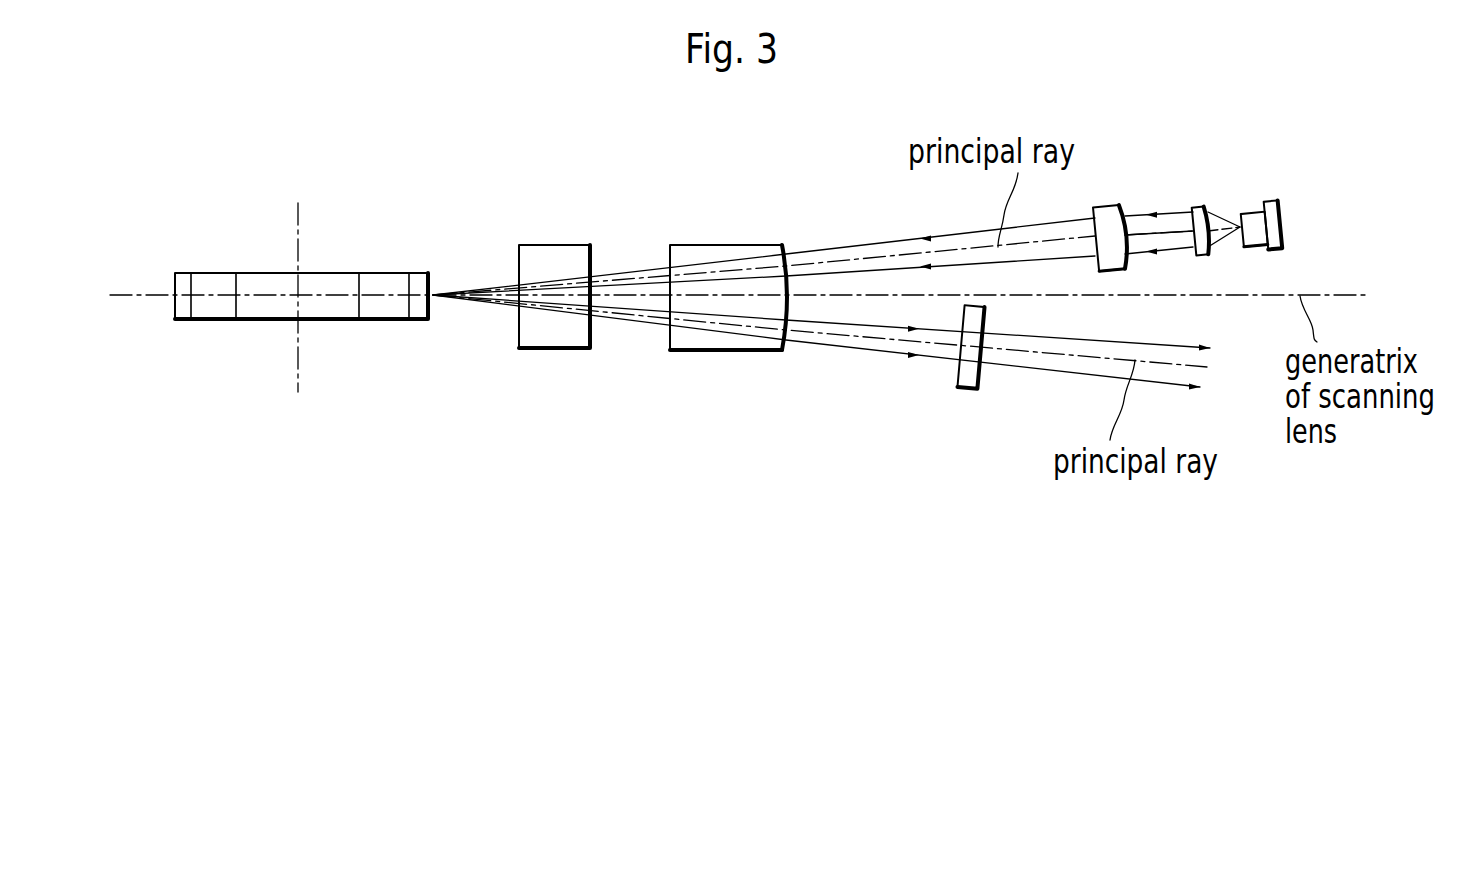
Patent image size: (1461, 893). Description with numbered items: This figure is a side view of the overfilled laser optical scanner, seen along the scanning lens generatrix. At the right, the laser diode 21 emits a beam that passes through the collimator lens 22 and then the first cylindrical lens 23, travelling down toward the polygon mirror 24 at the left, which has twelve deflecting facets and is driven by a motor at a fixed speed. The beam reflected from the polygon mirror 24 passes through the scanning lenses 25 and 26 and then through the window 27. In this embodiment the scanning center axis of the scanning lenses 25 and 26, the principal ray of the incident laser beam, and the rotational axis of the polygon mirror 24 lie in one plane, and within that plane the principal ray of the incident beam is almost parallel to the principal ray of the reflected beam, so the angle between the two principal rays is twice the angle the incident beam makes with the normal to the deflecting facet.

The laser diode 21 is at (1268, 202).
The collimator lens 22 is at (1196, 206).
The first cylindrical lens 23 is at (1103, 206).
The polygon mirror 24 is at (338, 274).
The scanning lens 25 is at (550, 246).
The scanning lens 26 is at (706, 246).
The window 27 is at (965, 391).